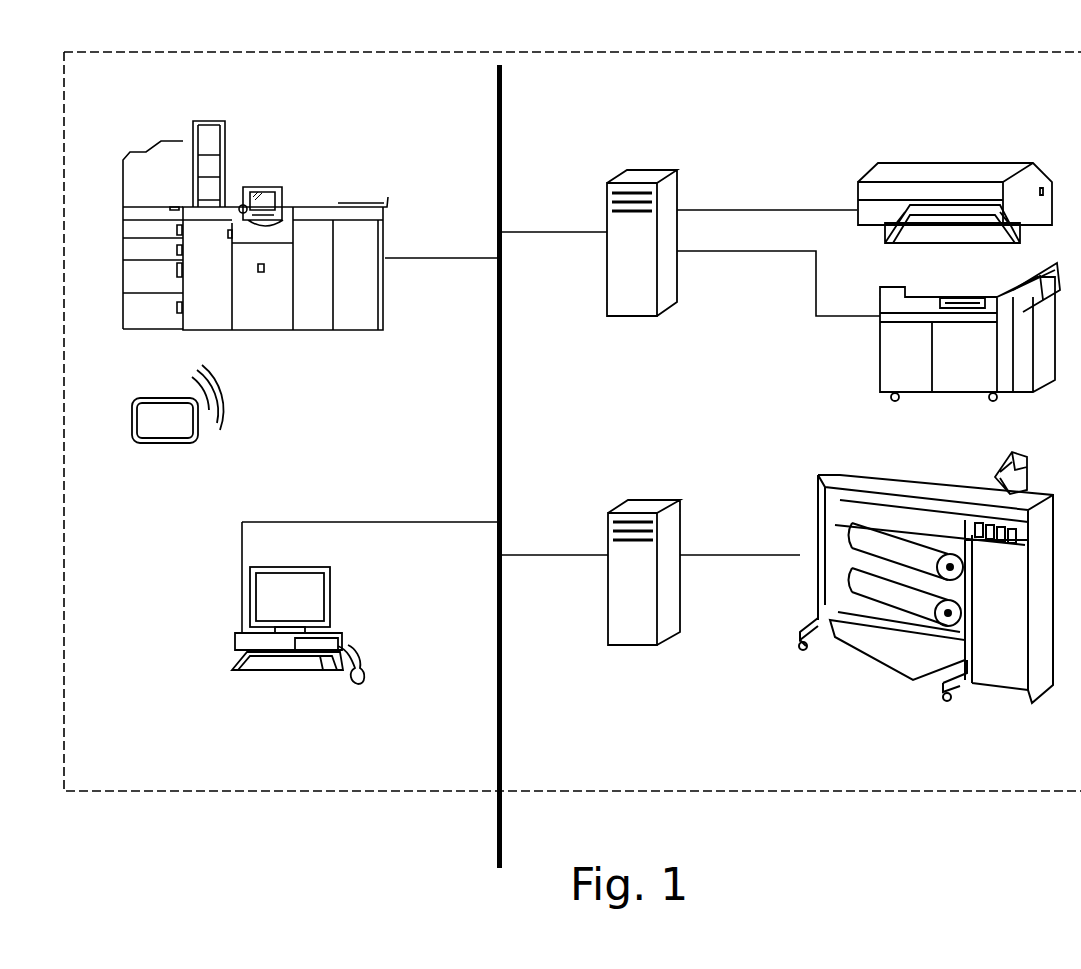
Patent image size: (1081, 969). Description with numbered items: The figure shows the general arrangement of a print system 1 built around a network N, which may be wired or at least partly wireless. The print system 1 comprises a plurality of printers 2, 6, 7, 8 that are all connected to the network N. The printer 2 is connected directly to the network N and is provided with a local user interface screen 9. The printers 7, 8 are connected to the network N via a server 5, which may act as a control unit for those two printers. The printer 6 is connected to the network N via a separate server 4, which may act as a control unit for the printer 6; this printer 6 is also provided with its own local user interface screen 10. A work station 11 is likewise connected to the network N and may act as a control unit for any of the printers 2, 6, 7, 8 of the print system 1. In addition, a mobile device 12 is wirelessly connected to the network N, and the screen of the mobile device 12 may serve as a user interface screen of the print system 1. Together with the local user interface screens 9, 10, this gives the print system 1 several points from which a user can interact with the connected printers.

The print system 1 is at (940, 52).
The network N is at (502, 107).
The printer 2 is at (255, 256).
The local user interface screen 9 is at (272, 187).
The server 4 is at (634, 648).
The server 5 is at (634, 318).
The printer 6 is at (902, 550).
The printer 7 is at (880, 338).
The printer 8 is at (857, 190).
The local user interface screen 10 is at (1013, 447).
The work station 11 is at (342, 643).
The mobile device 12 is at (145, 445).